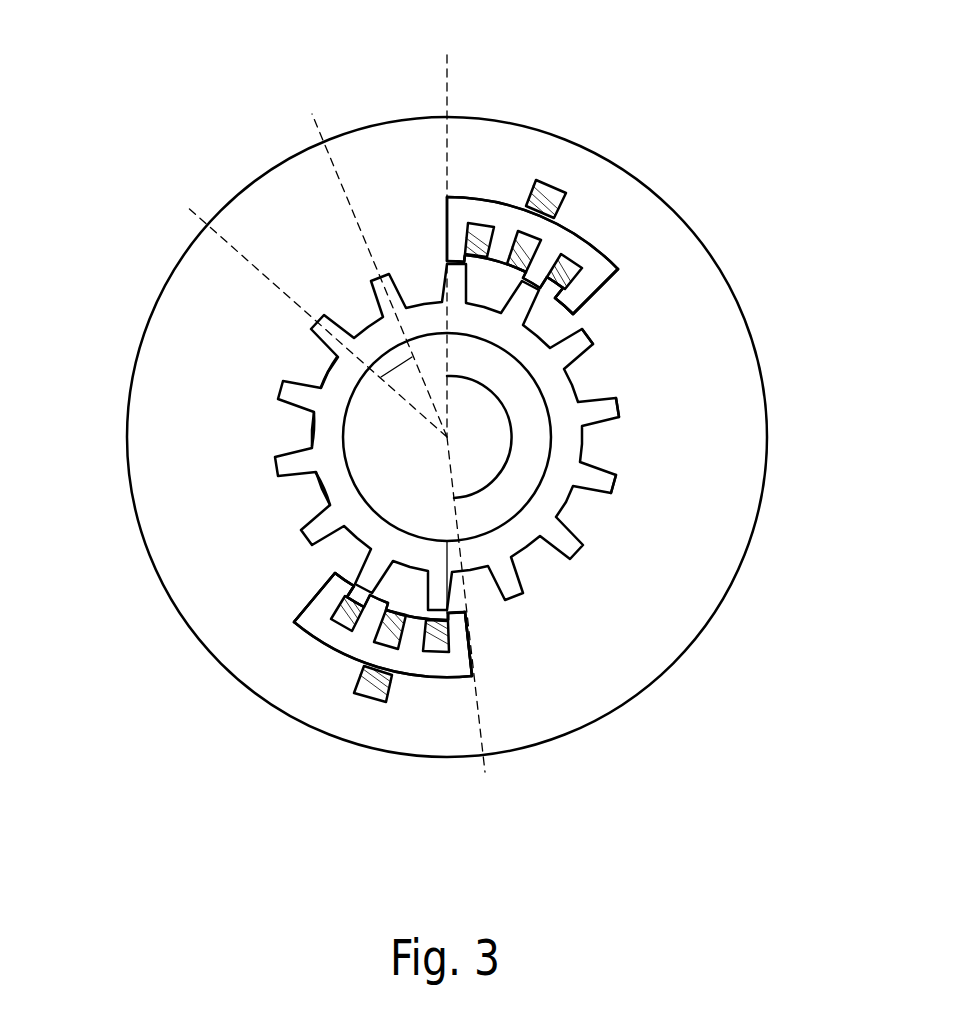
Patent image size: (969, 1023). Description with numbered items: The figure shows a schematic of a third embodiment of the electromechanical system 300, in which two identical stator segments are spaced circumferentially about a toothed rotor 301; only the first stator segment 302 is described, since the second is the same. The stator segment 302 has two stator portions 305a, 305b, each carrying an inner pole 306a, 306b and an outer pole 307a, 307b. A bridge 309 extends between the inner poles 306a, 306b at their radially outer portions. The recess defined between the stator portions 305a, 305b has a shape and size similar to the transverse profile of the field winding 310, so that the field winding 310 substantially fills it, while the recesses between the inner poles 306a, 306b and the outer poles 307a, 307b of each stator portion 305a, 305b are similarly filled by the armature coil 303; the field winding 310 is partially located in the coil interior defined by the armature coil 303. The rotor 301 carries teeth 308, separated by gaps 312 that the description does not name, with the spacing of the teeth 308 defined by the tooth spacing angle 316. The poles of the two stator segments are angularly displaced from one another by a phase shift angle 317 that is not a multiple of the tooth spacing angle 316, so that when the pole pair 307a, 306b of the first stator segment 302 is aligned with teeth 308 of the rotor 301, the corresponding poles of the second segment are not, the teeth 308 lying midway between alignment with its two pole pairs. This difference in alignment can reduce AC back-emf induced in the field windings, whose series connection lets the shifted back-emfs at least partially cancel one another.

The system 300 is at (759, 610).
The rotor 301 is at (303, 322).
The first stator segment 302 is at (593, 232).
The armature coil 303 is at (462, 205).
The first stator portion 305a is at (445, 153).
The second stator portion 305b is at (625, 262).
The first inner pole 306a is at (505, 245).
The second inner pole 306b is at (563, 262).
The first outer pole 307a is at (467, 244).
The second outer pole 307b is at (580, 287).
The teeth 308 is at (580, 342).
The bridge 309 is at (549, 250).
The field winding 310 is at (545, 195).
The rotor slots 312 is at (313, 360).
The tooth spacing angle 316 is at (392, 357).
The phase shift angle 317 is at (507, 465).